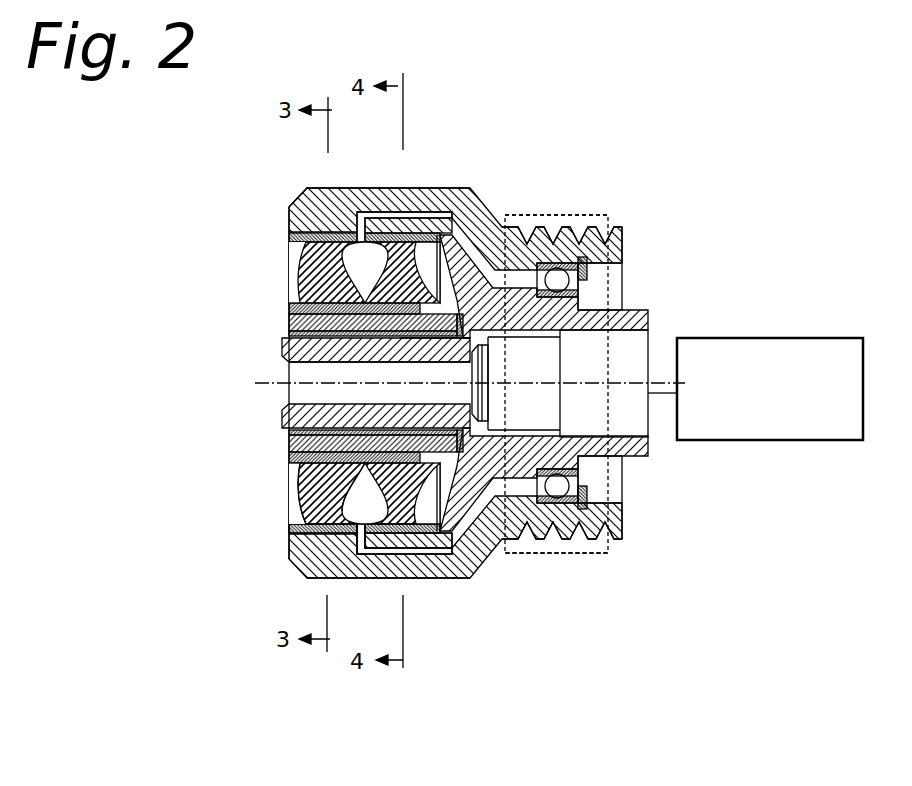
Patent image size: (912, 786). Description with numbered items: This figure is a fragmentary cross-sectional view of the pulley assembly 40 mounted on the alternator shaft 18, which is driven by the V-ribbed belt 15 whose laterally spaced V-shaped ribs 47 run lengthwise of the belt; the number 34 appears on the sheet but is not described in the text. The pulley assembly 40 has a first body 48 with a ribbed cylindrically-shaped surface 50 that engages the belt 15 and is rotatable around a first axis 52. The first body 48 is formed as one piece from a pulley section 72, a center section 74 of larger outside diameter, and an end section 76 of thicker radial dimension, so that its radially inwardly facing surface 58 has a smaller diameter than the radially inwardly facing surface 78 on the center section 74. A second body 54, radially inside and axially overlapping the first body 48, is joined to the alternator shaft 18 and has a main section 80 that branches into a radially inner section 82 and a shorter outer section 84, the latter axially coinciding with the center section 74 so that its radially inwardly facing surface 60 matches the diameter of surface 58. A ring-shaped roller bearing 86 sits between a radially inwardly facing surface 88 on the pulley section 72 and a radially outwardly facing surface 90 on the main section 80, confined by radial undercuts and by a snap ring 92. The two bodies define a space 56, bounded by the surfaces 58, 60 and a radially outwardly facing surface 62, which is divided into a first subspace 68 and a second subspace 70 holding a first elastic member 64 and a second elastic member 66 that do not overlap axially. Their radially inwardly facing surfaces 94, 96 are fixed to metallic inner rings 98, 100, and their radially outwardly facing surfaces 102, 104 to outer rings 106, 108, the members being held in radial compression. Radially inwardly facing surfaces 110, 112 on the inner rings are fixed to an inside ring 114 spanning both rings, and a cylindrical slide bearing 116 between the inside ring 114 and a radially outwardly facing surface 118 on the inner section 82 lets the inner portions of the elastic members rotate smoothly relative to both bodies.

The belt 15 is at (608, 218).
The alternator shaft 18 is at (757, 428).
The belt drive 34 is at (469, 10).
The pulley assembly 40 is at (248, 168).
The V-shaped ribs 47 is at (540, 222).
The first body 48 is at (393, 212).
The cylindrically-shaped surface 50 is at (572, 553).
The first axis 52 is at (630, 383).
The second body 54 is at (540, 313).
The space 56 is at (357, 530).
The radially inwardly facing surface 58 is at (316, 522).
The radially inwardly facing surface 60 is at (477, 530).
The radially outwardly facing surface 62 is at (288, 458).
The first elastic member 64 is at (417, 237).
The second elastic member 66 is at (325, 275).
The first subspace 68 is at (366, 519).
The second subspace 70 is at (374, 501).
The pulley section 72 is at (607, 520).
The center section 74 is at (433, 568).
The end section 76 is at (303, 212).
The radially inwardly facing surface 78 is at (403, 542).
The main section 80 is at (578, 283).
The inner section 82 is at (282, 352).
The outer section 84 is at (370, 223).
The roller bearing 86 is at (558, 280).
The radially inwardly facing surface 88 is at (514, 272).
The radially outwardly facing surface 90 is at (507, 480).
The snap ring 92 is at (588, 497).
The radially inwardly facing surface 94 is at (413, 338).
The radially inwardly facing surface 96 is at (377, 397).
The inner ring 98 is at (307, 366).
The inner ring 100 is at (288, 310).
The radially outwardly facing surface 102 is at (400, 536).
The radially outwardly facing surface 104 is at (292, 222).
The outer ring 106 is at (408, 237).
The outer ring 108 is at (330, 530).
The radially inwardly facing surface 110 is at (445, 397).
The radially inwardly facing surface 112 is at (322, 397).
The inside ring 114 is at (288, 326).
The slide bearing 116 is at (288, 432).
The radially outwardly facing surface 118 is at (288, 442).